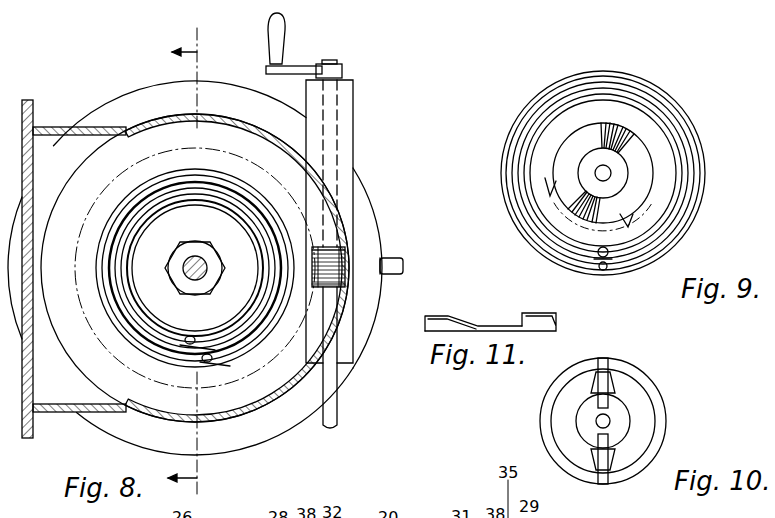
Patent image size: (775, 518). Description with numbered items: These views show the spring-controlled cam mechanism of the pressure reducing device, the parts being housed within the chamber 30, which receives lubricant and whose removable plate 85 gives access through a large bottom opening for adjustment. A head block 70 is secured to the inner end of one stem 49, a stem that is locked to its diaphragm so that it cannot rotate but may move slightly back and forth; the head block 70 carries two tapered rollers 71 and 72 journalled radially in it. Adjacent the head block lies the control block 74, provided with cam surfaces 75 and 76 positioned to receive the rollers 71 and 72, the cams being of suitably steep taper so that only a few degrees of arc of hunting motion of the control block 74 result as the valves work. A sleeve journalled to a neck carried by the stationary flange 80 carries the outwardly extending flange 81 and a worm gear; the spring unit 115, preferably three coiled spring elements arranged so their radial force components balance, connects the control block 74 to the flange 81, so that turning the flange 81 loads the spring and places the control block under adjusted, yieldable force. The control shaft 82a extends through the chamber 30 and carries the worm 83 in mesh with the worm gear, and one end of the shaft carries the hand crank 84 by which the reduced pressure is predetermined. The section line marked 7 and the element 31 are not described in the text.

In FIG. 8, the section line 7- 7 is at (190, 263).
In FIG. 8, the chamber 30 is at (268, 408).
In FIG. 8, the housing 31 is at (122, 432).
In FIG. 8, the stem 49 is at (192, 258).
In FIG. 8, the head block 70 is at (195, 268).
In FIG. 10, the head block 70 is at (633, 403).
In FIG. 10, the tapered roller 71 is at (608, 380).
In FIG. 10, the tapered roller 72 is at (608, 462).
In FIG. 9, the control block 74 is at (638, 167).
In FIG. 9, the cam surface 75 is at (640, 130).
In FIG. 11, the cam surface 75 is at (449, 315).
In FIG. 9, the cam surface 76 is at (575, 216).
In FIG. 11, the cam surface 76 is at (546, 313).
In FIG. 8, the flange 80 is at (275, 163).
In FIG. 8, the flange 81 is at (240, 350).
In FIG. 9, the flange 81 is at (680, 232).
In FIG. 8, the control shaft 82a is at (335, 410).
In FIG. 8, the worm 83 is at (355, 254).
In FIG. 8, the hand crank 84 is at (276, 36).
In FIG. 8, the removable plate 85 is at (25, 406).
In FIG. 8, the spring unit 115 is at (300, 203).